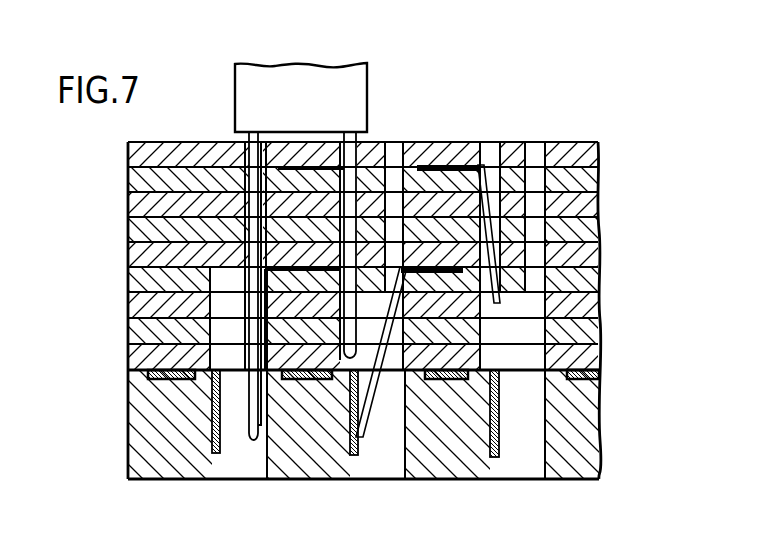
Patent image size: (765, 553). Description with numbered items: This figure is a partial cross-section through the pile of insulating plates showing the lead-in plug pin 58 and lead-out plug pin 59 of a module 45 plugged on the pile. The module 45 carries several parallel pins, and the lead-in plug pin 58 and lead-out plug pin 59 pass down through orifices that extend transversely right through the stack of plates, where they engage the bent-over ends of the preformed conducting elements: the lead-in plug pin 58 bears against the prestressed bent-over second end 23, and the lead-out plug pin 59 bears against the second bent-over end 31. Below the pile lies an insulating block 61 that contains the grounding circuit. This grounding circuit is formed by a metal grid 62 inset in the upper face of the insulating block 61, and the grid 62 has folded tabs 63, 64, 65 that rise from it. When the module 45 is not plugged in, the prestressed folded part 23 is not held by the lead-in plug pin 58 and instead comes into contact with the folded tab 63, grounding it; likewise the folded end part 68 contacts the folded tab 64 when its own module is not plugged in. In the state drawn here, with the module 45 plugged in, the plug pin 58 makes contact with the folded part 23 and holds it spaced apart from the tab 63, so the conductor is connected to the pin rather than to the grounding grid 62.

The bent-over second end 23 is at (262, 331).
The second bent-over end 31 is at (412, 143).
The module 45 is at (288, 93).
The lead-in plug pin 58 is at (253, 280).
The lead-out plug pin 59 is at (350, 162).
The insulating block 61 is at (170, 402).
The metal grid 62 is at (300, 382).
The folded tab 63 is at (220, 420).
The folded tab 64 is at (352, 457).
The folded tab 65 is at (500, 430).
The folded end part 68 is at (382, 427).